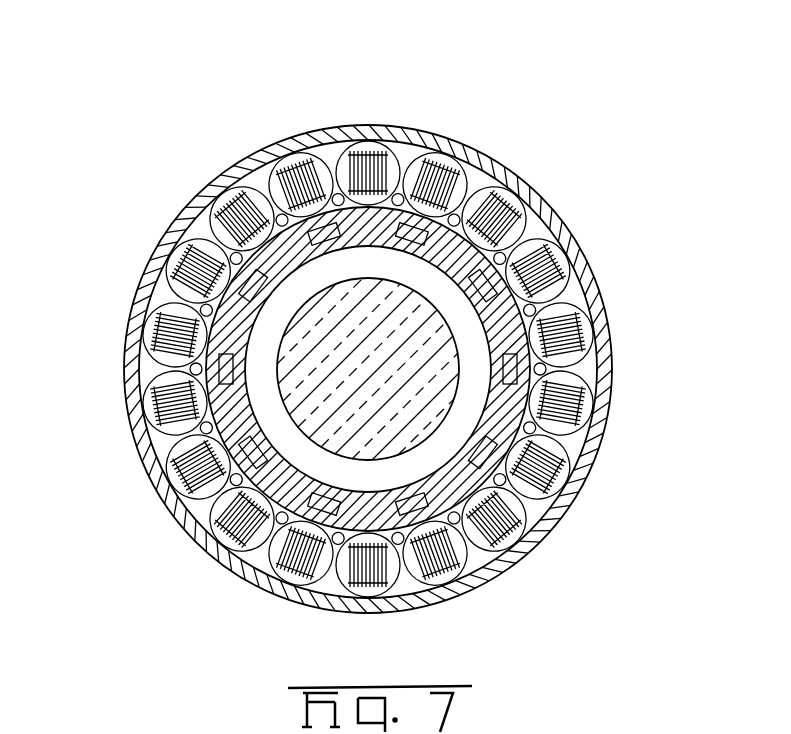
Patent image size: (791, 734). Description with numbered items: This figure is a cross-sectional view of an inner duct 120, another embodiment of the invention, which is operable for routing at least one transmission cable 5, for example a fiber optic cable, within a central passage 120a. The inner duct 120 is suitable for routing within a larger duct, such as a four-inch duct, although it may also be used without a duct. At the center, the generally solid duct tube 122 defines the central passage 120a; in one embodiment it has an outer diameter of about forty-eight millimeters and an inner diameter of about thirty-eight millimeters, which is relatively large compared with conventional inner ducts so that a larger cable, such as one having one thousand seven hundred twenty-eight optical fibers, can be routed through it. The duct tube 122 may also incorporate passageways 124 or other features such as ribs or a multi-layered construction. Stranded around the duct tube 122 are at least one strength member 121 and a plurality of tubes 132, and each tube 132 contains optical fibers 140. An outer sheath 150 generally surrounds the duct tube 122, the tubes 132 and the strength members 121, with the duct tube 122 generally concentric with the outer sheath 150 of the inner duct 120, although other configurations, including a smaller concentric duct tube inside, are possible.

The inner duct 120 is at (222, 118).
The central passage 120a is at (442, 455).
The duct tube 122 is at (523, 187).
The outer sheath 150 is at (568, 226).
The tube 132 is at (563, 280).
The strength member 121 is at (535, 425).
The optical fibers 140 is at (497, 537).
The passageways 124 is at (250, 283).
The transmission cable 5 is at (340, 432).